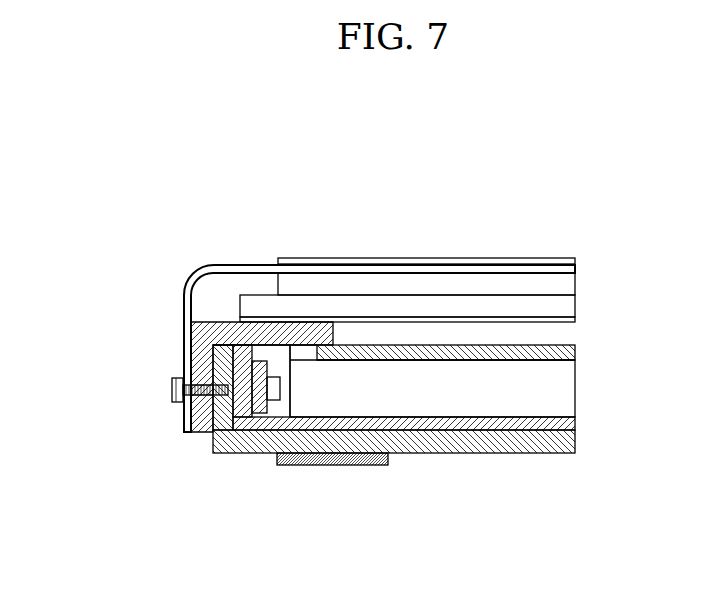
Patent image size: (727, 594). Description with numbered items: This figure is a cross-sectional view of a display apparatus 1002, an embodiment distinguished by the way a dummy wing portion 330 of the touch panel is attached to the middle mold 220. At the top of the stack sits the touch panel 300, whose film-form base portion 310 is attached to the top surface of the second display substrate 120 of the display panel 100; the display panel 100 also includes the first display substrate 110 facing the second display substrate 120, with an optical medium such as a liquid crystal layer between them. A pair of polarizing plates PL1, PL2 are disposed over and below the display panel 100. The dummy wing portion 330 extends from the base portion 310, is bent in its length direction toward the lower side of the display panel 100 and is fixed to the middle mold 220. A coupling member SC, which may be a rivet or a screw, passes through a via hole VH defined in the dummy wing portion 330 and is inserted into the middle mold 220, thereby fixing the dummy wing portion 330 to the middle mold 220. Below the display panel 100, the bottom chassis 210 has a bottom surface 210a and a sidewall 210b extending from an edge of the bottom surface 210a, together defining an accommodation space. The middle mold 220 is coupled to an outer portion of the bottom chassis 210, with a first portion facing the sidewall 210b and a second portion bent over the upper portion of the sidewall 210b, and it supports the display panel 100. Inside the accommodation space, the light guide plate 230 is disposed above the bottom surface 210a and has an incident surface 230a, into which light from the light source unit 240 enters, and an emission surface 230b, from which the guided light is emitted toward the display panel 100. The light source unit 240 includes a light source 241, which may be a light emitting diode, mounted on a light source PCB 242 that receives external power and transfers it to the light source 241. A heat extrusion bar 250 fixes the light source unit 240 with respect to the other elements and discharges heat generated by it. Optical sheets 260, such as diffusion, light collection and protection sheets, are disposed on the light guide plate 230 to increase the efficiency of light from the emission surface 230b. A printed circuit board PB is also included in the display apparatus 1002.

The display apparatus 1002 is at (548, 158).
The polarizing plate PL1 is at (577, 261).
The touch panel 300 is at (200, 264).
The base portion 310 is at (577, 266).
The dummy wing portion 330 is at (184, 303).
The display panel 100 is at (658, 282).
The second display substrate 120 is at (577, 283).
The first display substrate 110 is at (577, 308).
The polarizing plate PL2 is at (577, 320).
The middle mold 220 is at (191, 328).
The via hole VH is at (197, 372).
The coupling member SC is at (172, 390).
The optical sheets 260 is at (577, 354).
The light guide plate 230 is at (577, 390).
The incident surface 230a is at (289, 372).
The emission surface 230b is at (393, 359).
The heat extrusion bar 250 is at (577, 423).
The light source unit 240 is at (340, 532).
The light source PCB 242 is at (262, 412).
The light source 241 is at (272, 390).
The bottom chassis 210 is at (73, 403).
The bottom surface 210a is at (250, 443).
The sidewall 210b is at (220, 409).
The printed circuit board PB is at (363, 466).